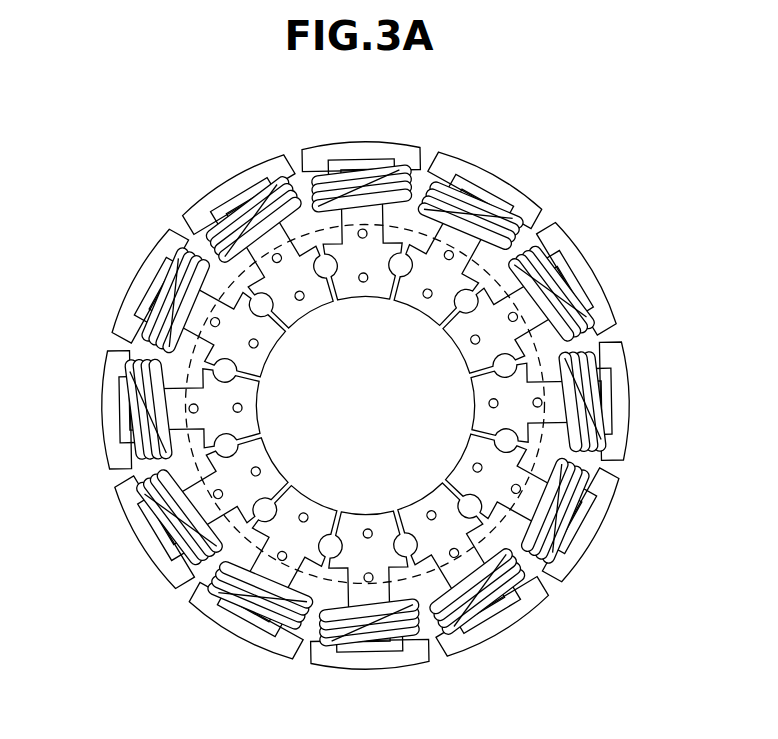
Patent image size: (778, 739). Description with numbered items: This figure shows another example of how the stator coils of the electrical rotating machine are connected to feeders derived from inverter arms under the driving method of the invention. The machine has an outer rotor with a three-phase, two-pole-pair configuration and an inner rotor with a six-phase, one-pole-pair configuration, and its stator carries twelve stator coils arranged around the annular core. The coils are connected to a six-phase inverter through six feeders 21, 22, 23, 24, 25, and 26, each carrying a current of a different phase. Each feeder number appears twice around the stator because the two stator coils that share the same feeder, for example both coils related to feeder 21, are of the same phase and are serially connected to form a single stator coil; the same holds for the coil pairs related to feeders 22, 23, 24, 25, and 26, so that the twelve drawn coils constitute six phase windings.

The feeder 21 is at (504, 207).
The feeder 22 is at (386, 164).
The feeder 23 is at (466, 627).
The feeder 24 is at (563, 546).
The feeder 25 is at (606, 428).
The feeder 26 is at (585, 304).